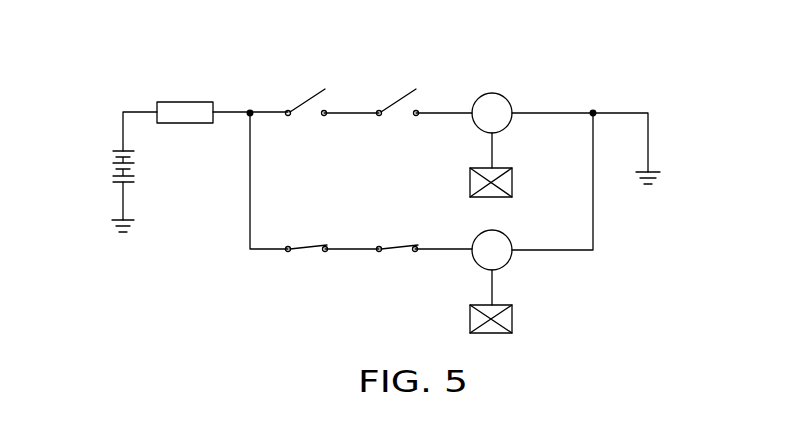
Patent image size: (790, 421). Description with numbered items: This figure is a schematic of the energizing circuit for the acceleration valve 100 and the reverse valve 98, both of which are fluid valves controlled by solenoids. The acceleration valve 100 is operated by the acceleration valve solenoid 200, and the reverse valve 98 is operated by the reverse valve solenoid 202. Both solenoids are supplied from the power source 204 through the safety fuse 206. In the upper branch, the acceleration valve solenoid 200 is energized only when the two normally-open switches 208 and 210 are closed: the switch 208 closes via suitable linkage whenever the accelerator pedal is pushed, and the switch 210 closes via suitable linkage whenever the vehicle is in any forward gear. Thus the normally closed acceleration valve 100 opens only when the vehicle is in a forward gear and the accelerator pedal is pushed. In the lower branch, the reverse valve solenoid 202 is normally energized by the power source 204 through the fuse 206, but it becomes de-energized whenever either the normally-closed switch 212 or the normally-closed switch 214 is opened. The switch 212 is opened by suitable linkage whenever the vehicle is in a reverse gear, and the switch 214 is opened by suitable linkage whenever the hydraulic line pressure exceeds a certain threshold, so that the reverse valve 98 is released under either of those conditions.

The power source 204 is at (147, 172).
The safety fuse 206 is at (176, 127).
The normally-open switch 208 is at (310, 108).
The normally-open switch 210 is at (402, 100).
The normally-closed switch 212 is at (305, 248).
The normally-closed switch 214 is at (397, 250).
The acceleration valve solenoid 200 is at (510, 107).
The reverse valve solenoid 202 is at (510, 248).
The acceleration valve 100 is at (512, 187).
The reverse valve 98 is at (512, 322).